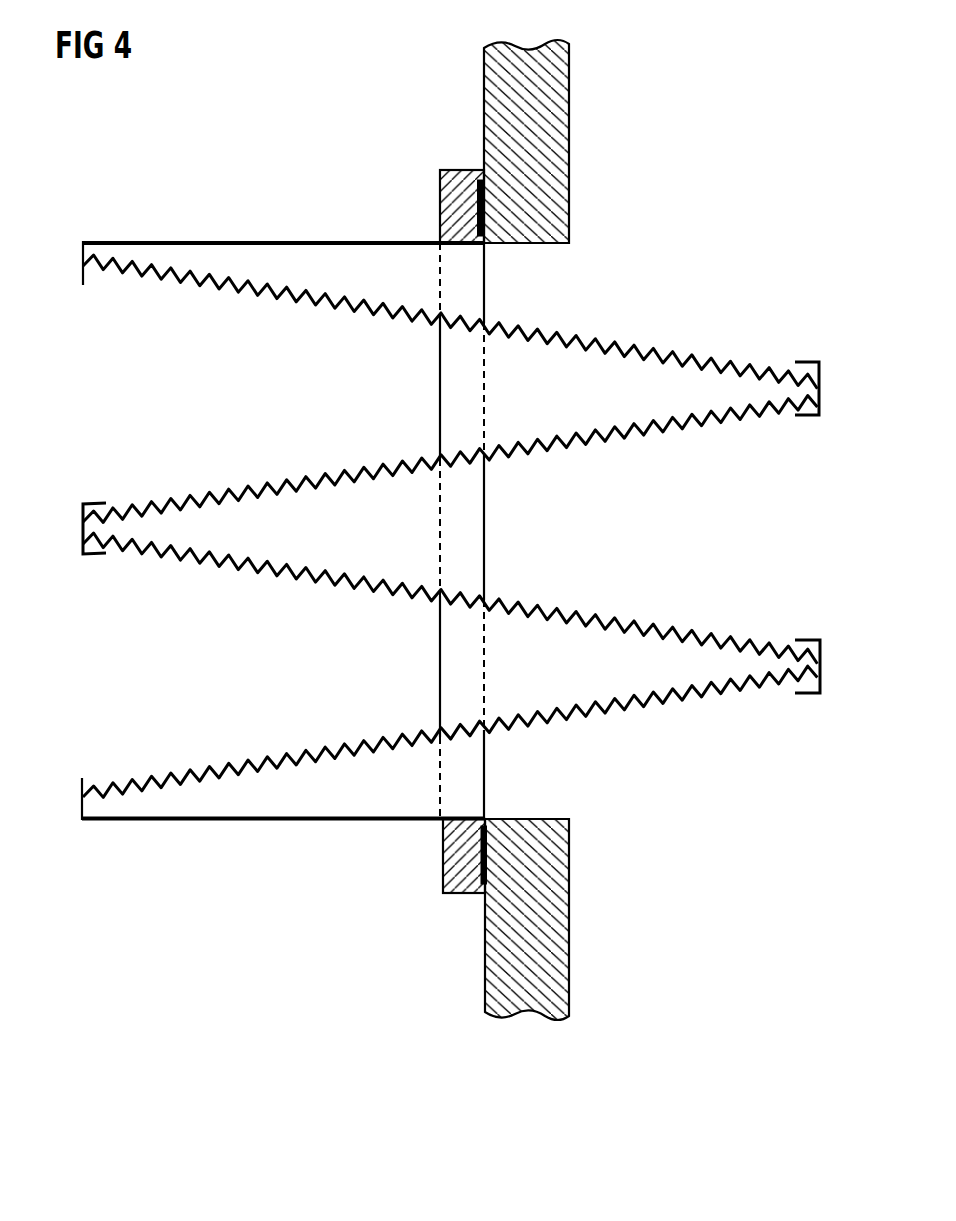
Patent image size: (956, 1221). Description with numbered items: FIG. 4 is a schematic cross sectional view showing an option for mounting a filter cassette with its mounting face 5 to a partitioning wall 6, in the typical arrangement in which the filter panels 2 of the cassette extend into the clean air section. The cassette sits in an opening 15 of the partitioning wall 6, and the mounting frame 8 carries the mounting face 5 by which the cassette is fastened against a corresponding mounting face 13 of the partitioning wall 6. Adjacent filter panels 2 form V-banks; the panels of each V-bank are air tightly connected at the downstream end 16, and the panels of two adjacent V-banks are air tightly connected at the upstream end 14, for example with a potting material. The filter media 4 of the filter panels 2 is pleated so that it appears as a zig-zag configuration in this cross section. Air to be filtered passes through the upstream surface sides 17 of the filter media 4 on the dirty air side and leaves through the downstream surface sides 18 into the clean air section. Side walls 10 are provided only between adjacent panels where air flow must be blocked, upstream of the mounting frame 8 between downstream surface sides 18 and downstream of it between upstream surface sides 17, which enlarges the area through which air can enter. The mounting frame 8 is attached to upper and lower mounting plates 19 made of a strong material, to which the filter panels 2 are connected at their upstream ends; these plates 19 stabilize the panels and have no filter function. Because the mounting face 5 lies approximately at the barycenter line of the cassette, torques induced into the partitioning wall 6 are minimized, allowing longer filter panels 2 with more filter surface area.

The filter panels 2 is at (529, 348).
The filter media 4 is at (777, 366).
The mounting face 5 is at (487, 212).
The partitioning wall 6 is at (557, 126).
The mounting frame 8 is at (450, 207).
The side walls 10 is at (298, 258).
The mounting face of the partitioning wall 13 is at (483, 241).
The upstream end 14 is at (67, 827).
The opening 15 is at (546, 544).
The downstream end 16 is at (841, 674).
The upstream surface sides 17 is at (272, 348).
The downstream surface sides 18 is at (652, 486).
The top and bottom walls / mounting plates 19 is at (255, 242).